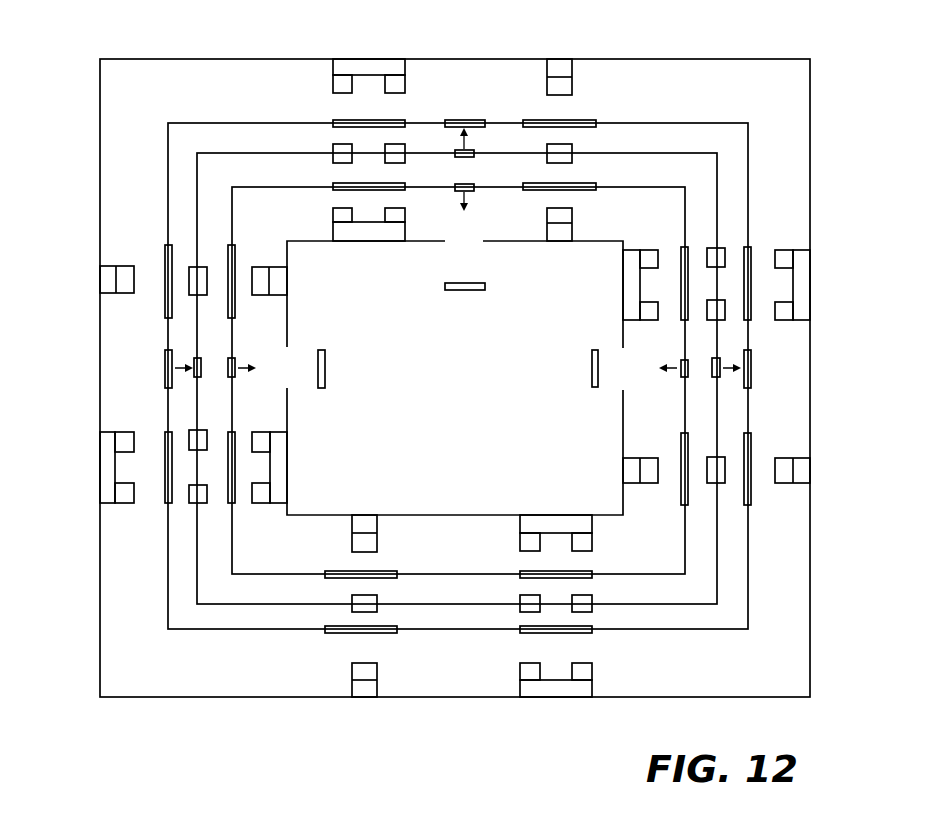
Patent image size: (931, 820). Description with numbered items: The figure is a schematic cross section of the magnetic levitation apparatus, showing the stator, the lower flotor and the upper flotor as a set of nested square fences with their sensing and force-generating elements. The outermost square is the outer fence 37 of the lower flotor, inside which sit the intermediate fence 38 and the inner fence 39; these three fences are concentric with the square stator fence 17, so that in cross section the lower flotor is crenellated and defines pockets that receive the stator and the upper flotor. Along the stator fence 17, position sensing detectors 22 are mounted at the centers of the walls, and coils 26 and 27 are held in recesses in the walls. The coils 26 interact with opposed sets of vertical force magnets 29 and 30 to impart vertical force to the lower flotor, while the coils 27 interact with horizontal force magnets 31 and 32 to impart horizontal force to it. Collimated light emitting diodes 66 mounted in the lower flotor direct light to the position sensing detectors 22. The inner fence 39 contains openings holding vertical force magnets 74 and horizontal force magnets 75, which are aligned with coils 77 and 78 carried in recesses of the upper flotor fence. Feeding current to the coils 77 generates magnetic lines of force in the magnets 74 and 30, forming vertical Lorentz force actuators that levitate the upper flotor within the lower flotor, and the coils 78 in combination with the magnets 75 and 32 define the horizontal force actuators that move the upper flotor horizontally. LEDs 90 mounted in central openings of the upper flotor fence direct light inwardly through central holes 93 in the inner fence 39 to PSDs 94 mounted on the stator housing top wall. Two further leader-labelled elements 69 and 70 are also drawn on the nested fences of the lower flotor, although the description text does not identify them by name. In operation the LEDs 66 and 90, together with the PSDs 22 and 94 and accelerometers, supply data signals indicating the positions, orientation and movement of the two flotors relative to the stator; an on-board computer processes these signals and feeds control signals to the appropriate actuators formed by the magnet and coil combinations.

The square fence 17 is at (218, 630).
The position sensing detectors 22 is at (473, 150).
The coils 26 is at (573, 120).
The coils 27 is at (398, 118).
The vertical force magnets 29 is at (565, 58).
The vertical force magnets 30 is at (567, 152).
The horizontal force magnets 31 is at (362, 58).
The horizontal force magnets 32 is at (330, 148).
The outer fence 37 is at (153, 698).
The intermediate fence 38 is at (458, 365).
The inner fence 39 is at (433, 403).
The light emitting diodes 66 is at (483, 120).
The intermediate frame 69 is at (197, 162).
The fourth frame 70 is at (720, 180).
The vertical force magnets 74 is at (285, 282).
The horizontal force magnets 75 is at (375, 242).
The coils 77 is at (530, 192).
The coils 78 is at (405, 192).
The LEDs 90 is at (470, 190).
The central holes 93 is at (483, 291).
The PSDs 94 is at (452, 291).